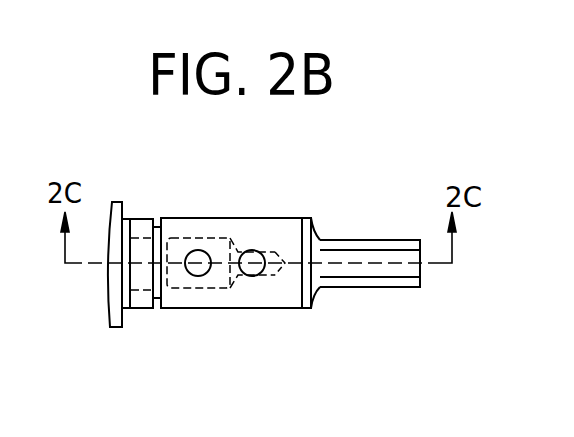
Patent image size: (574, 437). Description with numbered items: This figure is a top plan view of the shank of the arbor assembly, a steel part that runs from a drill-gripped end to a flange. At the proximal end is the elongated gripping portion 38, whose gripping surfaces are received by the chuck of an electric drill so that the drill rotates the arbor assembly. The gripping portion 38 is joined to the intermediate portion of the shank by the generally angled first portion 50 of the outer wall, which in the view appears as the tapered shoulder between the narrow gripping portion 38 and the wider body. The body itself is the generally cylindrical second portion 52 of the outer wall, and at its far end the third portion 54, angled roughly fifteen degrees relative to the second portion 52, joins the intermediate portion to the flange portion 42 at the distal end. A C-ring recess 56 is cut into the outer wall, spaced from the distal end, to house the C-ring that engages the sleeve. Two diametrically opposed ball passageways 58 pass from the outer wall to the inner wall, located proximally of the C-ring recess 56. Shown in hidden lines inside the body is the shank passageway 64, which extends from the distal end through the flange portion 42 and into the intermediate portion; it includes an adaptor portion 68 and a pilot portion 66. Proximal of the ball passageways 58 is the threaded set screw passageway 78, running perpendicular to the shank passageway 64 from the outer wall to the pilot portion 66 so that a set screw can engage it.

The gripping portion 38 is at (381, 240).
The flange portion 42 is at (117, 203).
The first portion 50 is at (316, 218).
The second portion 52 is at (238, 218).
The third portion 54 is at (129, 219).
The C-ring recess 56 is at (157, 227).
The ball passageways 58 is at (202, 278).
The shank passageway 64 is at (218, 278).
The pilot portion 66 is at (265, 278).
The adaptor portion 68 is at (193, 276).
The set screw passageway 78 is at (253, 277).